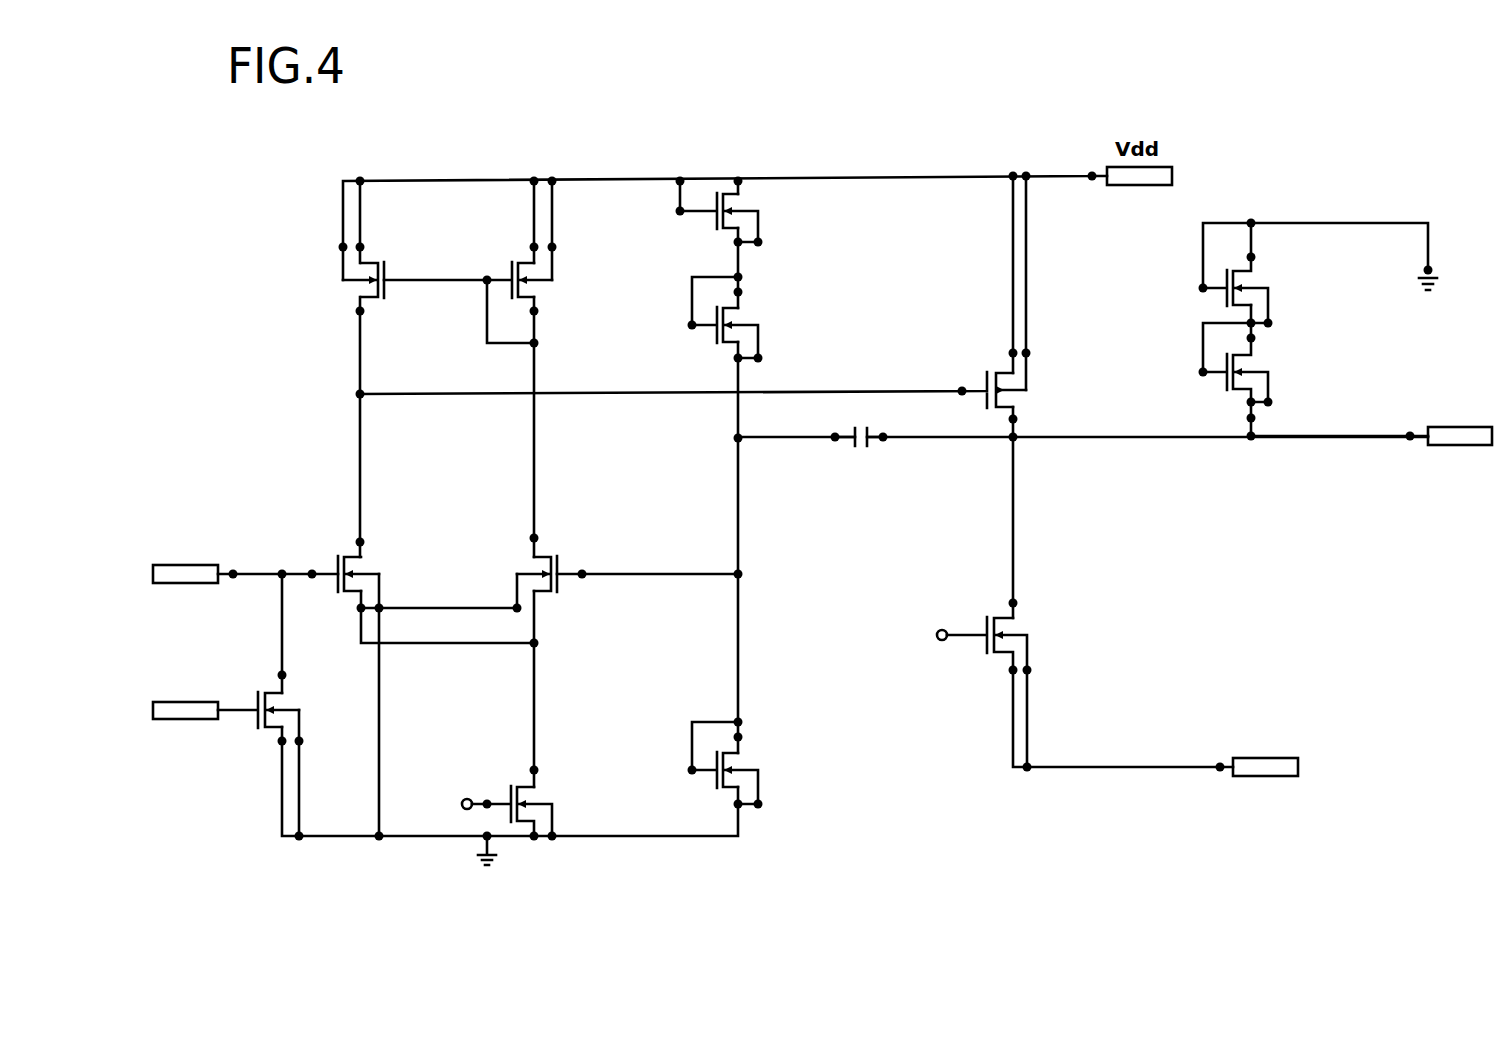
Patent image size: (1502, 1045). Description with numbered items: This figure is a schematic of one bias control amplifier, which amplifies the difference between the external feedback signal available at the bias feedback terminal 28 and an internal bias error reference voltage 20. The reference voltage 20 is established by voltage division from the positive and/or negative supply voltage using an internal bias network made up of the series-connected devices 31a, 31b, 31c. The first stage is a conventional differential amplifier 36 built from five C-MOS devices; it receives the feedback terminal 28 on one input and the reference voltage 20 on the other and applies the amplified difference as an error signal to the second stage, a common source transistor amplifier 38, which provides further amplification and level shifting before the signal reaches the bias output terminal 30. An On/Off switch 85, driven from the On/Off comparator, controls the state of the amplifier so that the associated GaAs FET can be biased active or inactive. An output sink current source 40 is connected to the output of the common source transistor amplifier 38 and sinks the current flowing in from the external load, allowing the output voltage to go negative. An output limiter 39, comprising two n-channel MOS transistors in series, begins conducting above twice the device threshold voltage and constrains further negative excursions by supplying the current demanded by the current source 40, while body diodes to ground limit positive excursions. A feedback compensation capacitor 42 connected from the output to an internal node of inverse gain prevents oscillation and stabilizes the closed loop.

The bias feedback terminal 28 is at (245, 554).
The On/Off switch 85 is at (249, 683).
The differential amplifier 36 is at (447, 563).
The bias error reference voltage 20 is at (647, 554).
The internal bias network transistor 31a is at (762, 211).
The internal bias network transistor 31b is at (768, 317).
The internal bias network transistor 31c is at (773, 763).
The feedback compensation capacitor 42 is at (867, 451).
The common source transistor amplifier 38 is at (693, 362).
The output limiter 39 is at (1287, 329).
The output sink current source 40 is at (1126, 678).
The bias output terminal 30 is at (1373, 453).